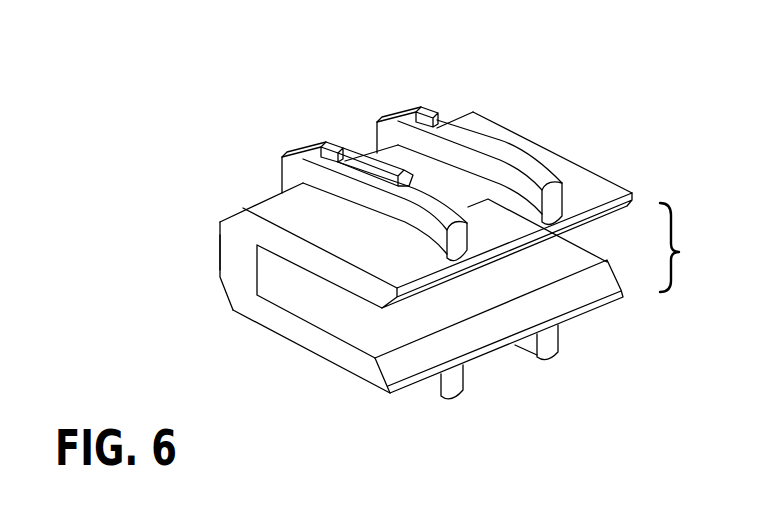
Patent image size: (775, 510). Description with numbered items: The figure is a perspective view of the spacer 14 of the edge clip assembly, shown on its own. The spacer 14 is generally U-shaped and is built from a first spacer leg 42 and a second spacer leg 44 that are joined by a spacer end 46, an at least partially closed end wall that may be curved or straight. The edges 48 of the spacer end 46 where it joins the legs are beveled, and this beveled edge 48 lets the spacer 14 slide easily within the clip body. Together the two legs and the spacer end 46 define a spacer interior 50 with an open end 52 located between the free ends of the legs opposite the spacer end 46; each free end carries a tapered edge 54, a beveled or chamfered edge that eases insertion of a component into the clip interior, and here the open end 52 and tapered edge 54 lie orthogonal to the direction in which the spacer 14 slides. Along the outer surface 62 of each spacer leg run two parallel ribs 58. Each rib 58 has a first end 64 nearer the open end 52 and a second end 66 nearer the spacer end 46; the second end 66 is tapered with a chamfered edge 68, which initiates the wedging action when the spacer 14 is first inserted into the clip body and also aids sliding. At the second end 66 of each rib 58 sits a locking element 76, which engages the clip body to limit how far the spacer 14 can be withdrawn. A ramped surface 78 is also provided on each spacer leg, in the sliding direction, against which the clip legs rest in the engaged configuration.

The spacer 14 is at (192, 98).
The first spacer leg 42 is at (291, 267).
The second spacer leg 44 is at (261, 336).
The spacer end 46 is at (217, 247).
The beveled edge 48 is at (231, 212).
The spacer interior 50 is at (326, 295).
The open end 52 is at (543, 252).
The tapered edge 54 is at (522, 252).
The rib 58 is at (432, 150).
The outer surface 62 is at (597, 197).
The first end 64 is at (446, 243).
The second end 66 is at (332, 117).
The chamfered edge 68 is at (401, 104).
The locking element 76 is at (437, 110).
The ramped surface 78 is at (493, 222).